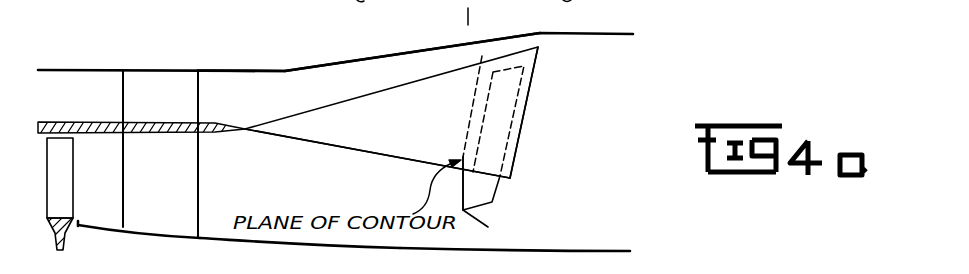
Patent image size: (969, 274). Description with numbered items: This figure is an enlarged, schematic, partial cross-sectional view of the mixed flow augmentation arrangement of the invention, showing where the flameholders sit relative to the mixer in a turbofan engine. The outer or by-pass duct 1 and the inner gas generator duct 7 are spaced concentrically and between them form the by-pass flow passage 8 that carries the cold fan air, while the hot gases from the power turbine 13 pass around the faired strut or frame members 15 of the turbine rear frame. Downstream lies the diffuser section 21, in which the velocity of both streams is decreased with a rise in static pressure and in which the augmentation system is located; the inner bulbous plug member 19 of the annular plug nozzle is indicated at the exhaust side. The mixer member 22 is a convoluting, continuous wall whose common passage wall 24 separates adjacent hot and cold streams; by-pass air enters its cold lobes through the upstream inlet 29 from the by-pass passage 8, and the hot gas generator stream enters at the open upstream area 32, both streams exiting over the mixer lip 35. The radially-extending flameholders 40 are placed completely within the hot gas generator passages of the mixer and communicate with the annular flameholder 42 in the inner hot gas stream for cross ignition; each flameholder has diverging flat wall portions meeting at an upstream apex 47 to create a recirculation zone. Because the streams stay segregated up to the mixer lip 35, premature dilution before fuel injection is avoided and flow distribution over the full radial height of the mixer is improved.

The outer by-pass duct 1 is at (501, 34).
The inner gas generator duct 7 is at (105, 122).
The by-pass flow passage 8 is at (232, 110).
The power turbine 13 is at (62, 190).
The faired strut or frame members 15 is at (163, 223).
The inner bulbous plug member 19 is at (437, 252).
The diffuser section 21 is at (403, 70).
The mixer member 22 is at (395, 170).
The common passage wall 24 is at (420, 132).
The upstream inlet 29 is at (341, 80).
The open upstream area 32 is at (310, 235).
The mixer lip 35 is at (535, 61).
The radial flameholders 40 is at (512, 127).
The annular flameholder 42 is at (492, 217).
The upstream apex 47 is at (463, 190).